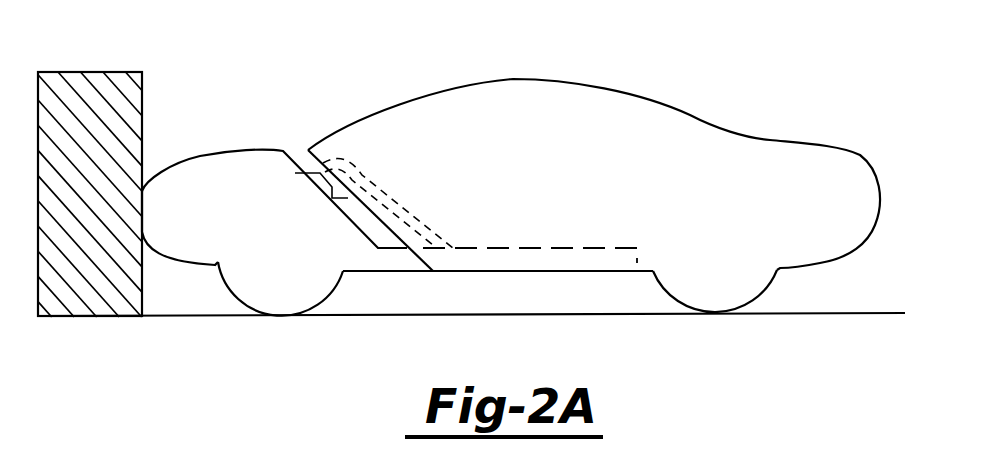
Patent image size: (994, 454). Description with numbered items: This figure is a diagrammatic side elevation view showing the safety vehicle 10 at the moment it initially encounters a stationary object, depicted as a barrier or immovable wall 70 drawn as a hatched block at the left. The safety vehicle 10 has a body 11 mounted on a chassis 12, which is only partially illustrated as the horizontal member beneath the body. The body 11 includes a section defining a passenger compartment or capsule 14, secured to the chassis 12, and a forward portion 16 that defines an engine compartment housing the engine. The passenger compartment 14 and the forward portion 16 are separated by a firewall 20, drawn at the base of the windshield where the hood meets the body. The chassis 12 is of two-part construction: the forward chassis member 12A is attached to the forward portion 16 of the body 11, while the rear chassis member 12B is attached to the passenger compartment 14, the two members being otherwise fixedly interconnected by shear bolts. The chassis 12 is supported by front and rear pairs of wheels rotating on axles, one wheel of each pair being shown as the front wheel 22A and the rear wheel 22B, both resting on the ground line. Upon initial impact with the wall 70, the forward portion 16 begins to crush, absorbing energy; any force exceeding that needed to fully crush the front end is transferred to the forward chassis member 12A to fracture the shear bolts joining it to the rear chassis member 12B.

The safety vehicle 10 is at (297, 111).
The body 11 is at (518, 79).
The chassis 12 is at (405, 275).
The forward chassis member 12A is at (372, 272).
The rear chassis member 12B is at (560, 271).
The passenger compartment 14 is at (610, 225).
The forward portion 16 is at (192, 175).
The firewall 20 is at (355, 212).
The front wheel 22A is at (288, 292).
The rear wheel 22B is at (723, 290).
The immovable wall 70 is at (82, 100).